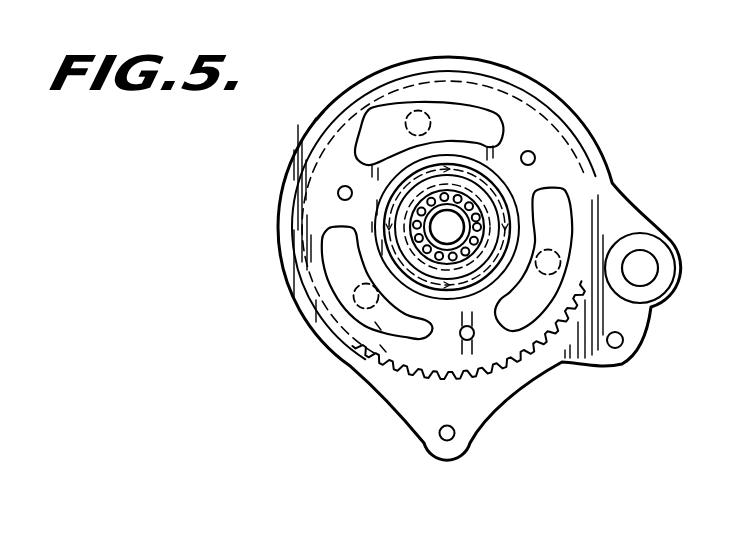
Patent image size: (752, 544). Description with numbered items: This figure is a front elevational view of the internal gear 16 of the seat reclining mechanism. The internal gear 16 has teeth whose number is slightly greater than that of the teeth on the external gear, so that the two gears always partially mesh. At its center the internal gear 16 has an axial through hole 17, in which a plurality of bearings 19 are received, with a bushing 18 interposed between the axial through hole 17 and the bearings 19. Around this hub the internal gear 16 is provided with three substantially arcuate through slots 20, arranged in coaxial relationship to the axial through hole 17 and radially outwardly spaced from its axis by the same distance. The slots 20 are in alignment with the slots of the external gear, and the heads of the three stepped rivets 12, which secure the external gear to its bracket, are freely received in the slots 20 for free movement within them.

The stepped rivets 12 is at (414, 112).
The internal gear 16 is at (562, 104).
The axial through hole 17 is at (400, 211).
The bushing 18 is at (393, 236).
The bearings 19 is at (468, 190).
The arcuate through slots 20 is at (459, 105).